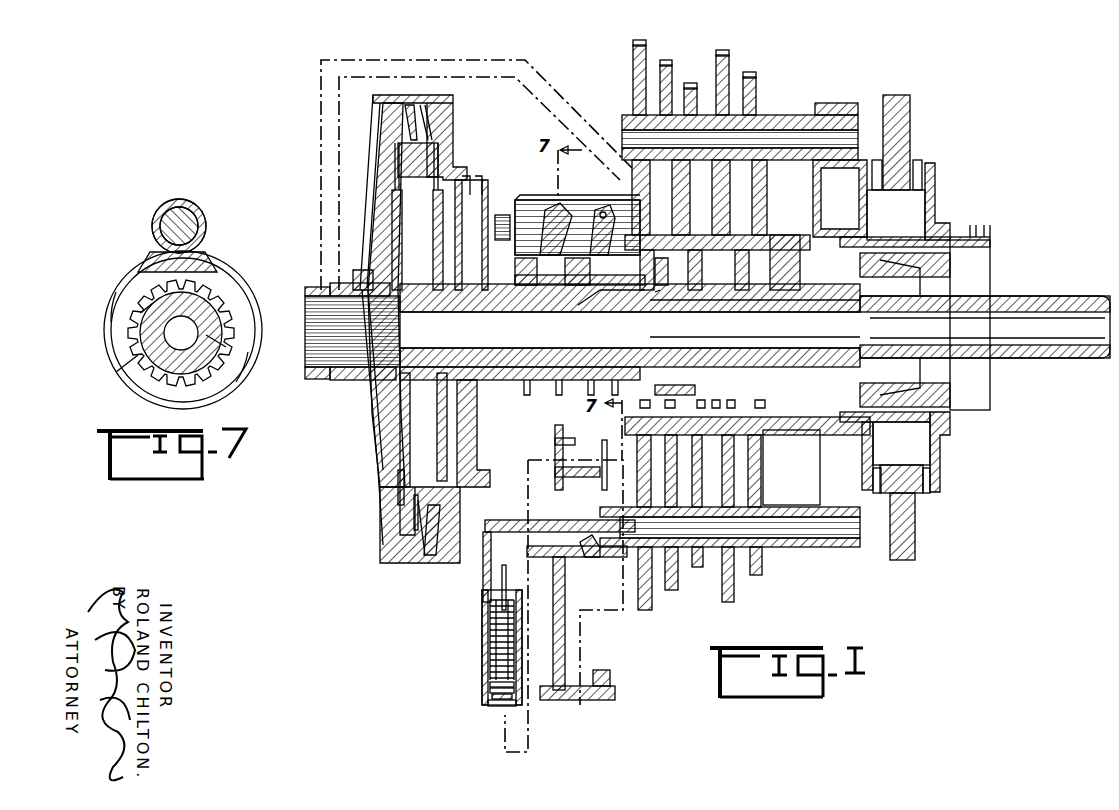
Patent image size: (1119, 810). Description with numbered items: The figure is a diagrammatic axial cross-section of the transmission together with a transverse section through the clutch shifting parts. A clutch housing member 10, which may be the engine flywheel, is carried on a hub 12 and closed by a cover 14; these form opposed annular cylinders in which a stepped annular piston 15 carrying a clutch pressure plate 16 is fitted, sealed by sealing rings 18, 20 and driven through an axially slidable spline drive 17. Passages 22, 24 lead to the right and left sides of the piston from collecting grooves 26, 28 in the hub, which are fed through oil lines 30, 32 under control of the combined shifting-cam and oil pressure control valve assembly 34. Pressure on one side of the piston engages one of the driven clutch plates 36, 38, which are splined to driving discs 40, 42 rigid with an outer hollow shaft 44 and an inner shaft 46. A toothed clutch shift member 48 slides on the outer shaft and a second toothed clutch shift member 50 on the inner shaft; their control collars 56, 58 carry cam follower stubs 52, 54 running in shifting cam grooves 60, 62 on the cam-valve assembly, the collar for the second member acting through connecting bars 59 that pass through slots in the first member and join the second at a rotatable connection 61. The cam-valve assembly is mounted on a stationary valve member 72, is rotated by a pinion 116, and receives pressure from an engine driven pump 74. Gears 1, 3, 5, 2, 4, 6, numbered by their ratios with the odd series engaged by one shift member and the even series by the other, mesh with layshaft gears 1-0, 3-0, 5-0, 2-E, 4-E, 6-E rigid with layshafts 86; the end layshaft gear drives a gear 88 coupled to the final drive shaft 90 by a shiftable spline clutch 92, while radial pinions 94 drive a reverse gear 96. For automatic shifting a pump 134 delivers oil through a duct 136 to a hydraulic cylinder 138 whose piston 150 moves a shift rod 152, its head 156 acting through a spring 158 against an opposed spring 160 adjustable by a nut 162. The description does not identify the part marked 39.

In FIG. 1, the layshaft gear 1-0 is at (637, 42).
In FIG. 1, the layshaft gear 3-0 is at (665, 62).
In FIG. 1, the layshaft gear 5-0 is at (690, 84).
In FIG. 1, the layshaft gear 2-E is at (722, 51).
In FIG. 1, the layshaft gear 4-E is at (750, 73).
In FIG. 1, the end layshaft gear 6-E is at (828, 103).
In FIG. 1, the first ratio gear 1 is at (660, 185).
In FIG. 1, the second ratio gear 2 is at (751, 197).
In FIG. 1, the third ratio gear 3 is at (682, 197).
In FIG. 1, the fourth ratio gear 4 is at (760, 205).
In FIG. 1, the fifth ratio gear 5 is at (716, 197).
In FIG. 1, the sixth ratio gear 6 is at (790, 238).
In FIG. 1, the clutch housing member 10 is at (372, 440).
In FIG. 1, the hub 12 is at (312, 366).
In FIG. 1, the cover 14 is at (450, 122).
In FIG. 1, the stepped annular piston 15 is at (425, 106).
In FIG. 1, the clutch pressure plate 16 is at (420, 185).
In FIG. 1, the axially slidable spline drive 17 is at (400, 558).
In FIG. 1, the sealing ring 18 is at (432, 558).
In FIG. 1, the sealing ring 20 is at (420, 500).
In FIG. 1, the passage 22 is at (373, 126).
In FIG. 1, the passage 24 is at (382, 548).
In FIG. 1, the collecting groove 26 is at (353, 380).
In FIG. 1, the collecting groove 28 is at (320, 380).
In FIG. 1, the oil line 30 is at (340, 198).
In FIG. 1, the oil line 32 is at (321, 190).
In FIG. 7, the combined shifting-cam and oil pressure control valve assembly 34 is at (194, 204).
In FIG. 1, the combined shifting-cam and oil pressure control valve assembly 34 is at (525, 199).
In FIG. 1, the driven clutch plate 36 is at (462, 488).
In FIG. 1, the driven clutch plate 38 is at (398, 492).
In FIG. 1, the shaft bore 39 is at (580, 305).
In FIG. 1, the driving disc 40 is at (447, 432).
In FIG. 1, the driving disc 42 is at (405, 425).
In FIG. 7, the outer hollow shaft 44 is at (205, 368).
In FIG. 1, the outer hollow shaft 44 is at (500, 382).
In FIG. 7, the inner shaft 46 is at (150, 335).
In FIG. 1, the inner shaft 46 is at (446, 353).
In FIG. 1, the toothed clutch shift member 48 is at (603, 440).
In FIG. 1, the second toothed clutch shift member 50 is at (720, 405).
In FIG. 1, the cam follower stub 52 is at (471, 233).
In FIG. 7, the cam follower stub 54 is at (158, 258).
In FIG. 1, the cam follower stub 54 is at (577, 227).
In FIG. 1, the control collar 56 is at (515, 272).
In FIG. 7, the control collar 58 is at (242, 272).
In FIG. 1, the control collar 58 is at (590, 272).
In FIG. 7, the connecting bars 59 is at (116, 372).
In FIG. 1, the connecting bars 59 is at (672, 300).
In FIG. 1, the shifting cam groove 60 is at (550, 210).
In FIG. 1, the rotatable connection 61 is at (685, 270).
In FIG. 1, the shifting cam groove 62 is at (593, 210).
In FIG. 7, the stationary valve member 72 is at (199, 217).
In FIG. 1, the engine driven pump 74 is at (605, 672).
In FIG. 1, the layshafts 86 is at (795, 546).
In FIG. 1, the gear 88 is at (835, 185).
In FIG. 1, the final drive shaft 90 is at (1040, 298).
In FIG. 1, the shiftable spline clutch 92 is at (860, 262).
In FIG. 1, the radial pinions 94 is at (908, 162).
In FIG. 1, the gear 96 is at (945, 196).
In FIG. 1, the pinion 116 is at (502, 215).
In FIG. 1, the pump 134 is at (555, 440).
In FIG. 1, the duct 136 is at (546, 700).
In FIG. 1, the hydraulic cylinder 138 is at (488, 680).
In FIG. 1, the piston 150 is at (488, 668).
In FIG. 1, the shift rod 152 is at (502, 586).
In FIG. 1, the head 156 is at (490, 690).
In FIG. 1, the spring 158 is at (488, 700).
In FIG. 1, the spring 160 is at (482, 618).
In FIG. 1, the nut 162 is at (557, 553).